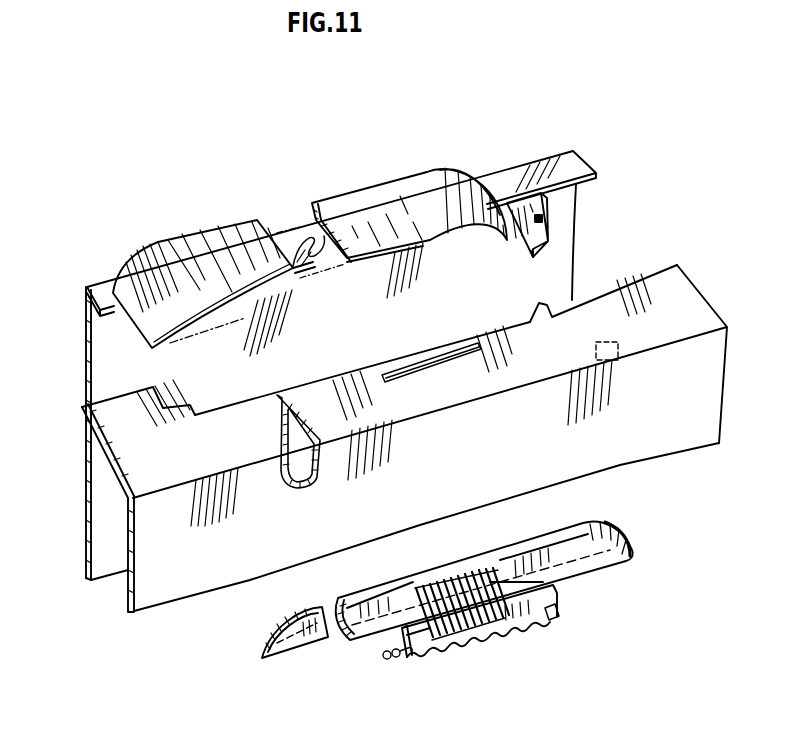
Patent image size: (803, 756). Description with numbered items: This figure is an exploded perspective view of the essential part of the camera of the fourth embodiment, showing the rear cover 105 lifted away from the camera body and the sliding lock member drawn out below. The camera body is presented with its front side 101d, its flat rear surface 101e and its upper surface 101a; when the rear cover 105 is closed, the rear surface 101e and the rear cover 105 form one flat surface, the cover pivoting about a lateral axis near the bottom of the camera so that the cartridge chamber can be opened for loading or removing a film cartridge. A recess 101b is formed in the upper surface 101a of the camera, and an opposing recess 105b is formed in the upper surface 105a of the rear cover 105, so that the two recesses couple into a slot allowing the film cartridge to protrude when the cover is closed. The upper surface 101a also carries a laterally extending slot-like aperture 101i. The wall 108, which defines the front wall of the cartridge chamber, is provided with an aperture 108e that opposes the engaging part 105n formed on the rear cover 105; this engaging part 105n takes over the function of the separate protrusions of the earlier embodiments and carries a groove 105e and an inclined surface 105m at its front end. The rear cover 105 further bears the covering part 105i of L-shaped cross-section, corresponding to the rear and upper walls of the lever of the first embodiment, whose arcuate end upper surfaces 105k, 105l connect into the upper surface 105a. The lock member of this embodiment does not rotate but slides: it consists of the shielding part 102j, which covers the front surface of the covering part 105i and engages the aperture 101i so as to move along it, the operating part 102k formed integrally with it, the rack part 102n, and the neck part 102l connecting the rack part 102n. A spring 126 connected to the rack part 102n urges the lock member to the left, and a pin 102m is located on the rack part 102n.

The rear cover 105 is at (513, 166).
The upper surface of rear cover 105a is at (556, 164).
The recess 105b is at (305, 238).
The groove 105e is at (540, 217).
The covering part 105i is at (353, 195).
The upper surface end of covering part 105k is at (115, 280).
The upper surface end of covering part 105l is at (465, 182).
The inclined surface 105m is at (550, 243).
The engaging part 105n is at (531, 241).
The upper surface of camera 101a is at (117, 433).
The recess 101b is at (535, 319).
The front side of camera 101d is at (180, 517).
The rear surface of camera 101e is at (108, 403).
The slot-like aperture 101i is at (450, 360).
The wall 108 is at (288, 412).
The aperture 108e is at (618, 356).
The shielding part 102j is at (572, 552).
The operating part 102k is at (547, 584).
The neck part 102l is at (455, 640).
The pin 102m is at (558, 619).
The rack part 102n is at (518, 627).
The spring 126 is at (388, 660).